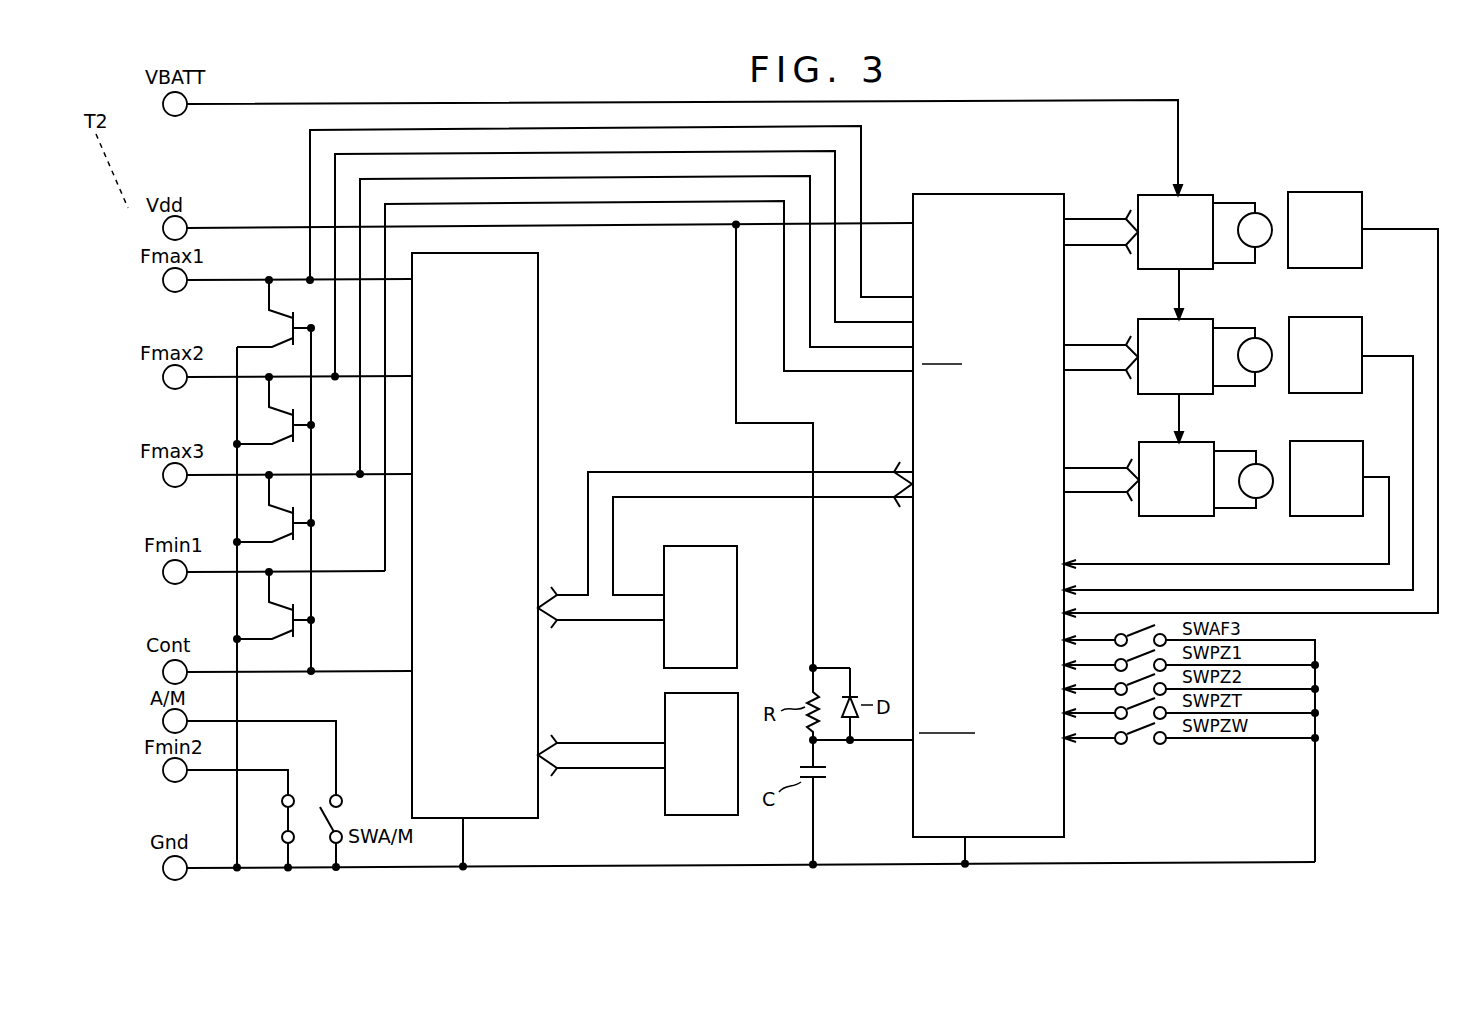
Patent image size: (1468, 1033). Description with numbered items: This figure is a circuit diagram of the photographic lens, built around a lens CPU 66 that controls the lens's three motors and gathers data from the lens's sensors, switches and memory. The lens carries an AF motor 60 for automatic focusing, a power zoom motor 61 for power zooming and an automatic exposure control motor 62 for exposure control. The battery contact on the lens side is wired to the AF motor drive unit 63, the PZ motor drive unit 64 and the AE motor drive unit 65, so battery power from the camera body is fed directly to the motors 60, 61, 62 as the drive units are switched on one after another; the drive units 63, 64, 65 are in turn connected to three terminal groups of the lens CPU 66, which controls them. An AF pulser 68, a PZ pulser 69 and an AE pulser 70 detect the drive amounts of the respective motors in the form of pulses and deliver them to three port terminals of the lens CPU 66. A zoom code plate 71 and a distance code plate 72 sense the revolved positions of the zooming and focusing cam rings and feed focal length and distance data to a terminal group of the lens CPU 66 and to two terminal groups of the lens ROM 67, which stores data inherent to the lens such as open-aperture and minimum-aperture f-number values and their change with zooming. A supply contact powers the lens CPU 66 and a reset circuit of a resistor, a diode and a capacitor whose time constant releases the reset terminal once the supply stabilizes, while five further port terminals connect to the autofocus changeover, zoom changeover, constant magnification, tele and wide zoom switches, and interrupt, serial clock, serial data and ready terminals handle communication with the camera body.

The AF motor 60 is at (1264, 212).
The power zoom (PZ) motor 61 is at (1260, 336).
The automatic exposure (AE) control motor 62 is at (1261, 464).
The AF motor drive unit 63 is at (1206, 190).
The PZ motor drive unit 64 is at (1147, 316).
The AE motor drive unit 65 is at (1147, 440).
The lens CPU 66 is at (990, 194).
The lens ROM 67 is at (538, 345).
The AF pulser 68 is at (1326, 192).
The PZ pulser 69 is at (1352, 317).
The AE pulser 70 is at (1325, 441).
The zoom code plate 71 is at (699, 546).
The distance code plate 72 is at (712, 815).